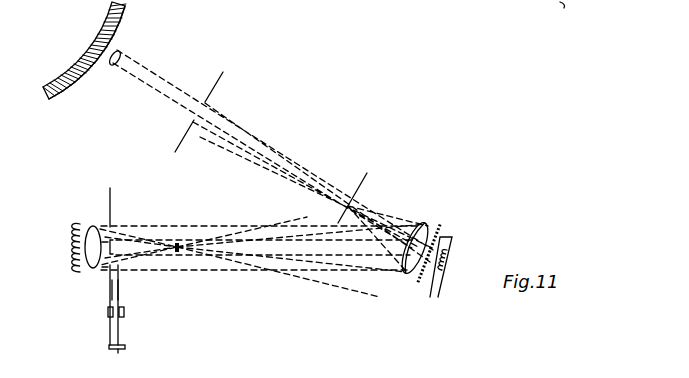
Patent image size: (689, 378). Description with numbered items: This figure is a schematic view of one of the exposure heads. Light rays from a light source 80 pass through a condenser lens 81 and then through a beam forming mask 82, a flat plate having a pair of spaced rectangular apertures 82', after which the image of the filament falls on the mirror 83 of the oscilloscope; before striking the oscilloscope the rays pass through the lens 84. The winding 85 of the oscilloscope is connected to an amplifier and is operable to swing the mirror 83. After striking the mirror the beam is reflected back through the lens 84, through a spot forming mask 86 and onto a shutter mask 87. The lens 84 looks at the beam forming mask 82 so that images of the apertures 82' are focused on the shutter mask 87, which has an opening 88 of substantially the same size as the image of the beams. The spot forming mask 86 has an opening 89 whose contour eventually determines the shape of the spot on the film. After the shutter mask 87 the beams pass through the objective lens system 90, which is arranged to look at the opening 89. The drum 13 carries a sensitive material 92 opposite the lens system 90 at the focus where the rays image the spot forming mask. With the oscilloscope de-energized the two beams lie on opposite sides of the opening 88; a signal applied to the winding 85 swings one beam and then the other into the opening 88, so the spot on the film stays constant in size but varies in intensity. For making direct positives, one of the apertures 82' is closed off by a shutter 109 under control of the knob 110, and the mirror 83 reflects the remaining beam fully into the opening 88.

The drum 13 is at (127, 8).
The sensitive material 92 is at (86, 80).
The objective lens system 90 is at (120, 52).
The shutter mask 87 is at (222, 76).
The opening 88 is at (202, 106).
The opening 89 is at (345, 197).
The spot forming mask 86 is at (368, 176).
The lens 84 is at (410, 274).
The mirror 83 is at (438, 222).
The winding 85 is at (452, 240).
The light source 80 is at (68, 250).
The condenser lens 81 is at (90, 266).
The beam forming mask 82 is at (126, 266).
The apertures 82' is at (143, 229).
The shutter 109 is at (119, 279).
The knob 110 is at (124, 351).